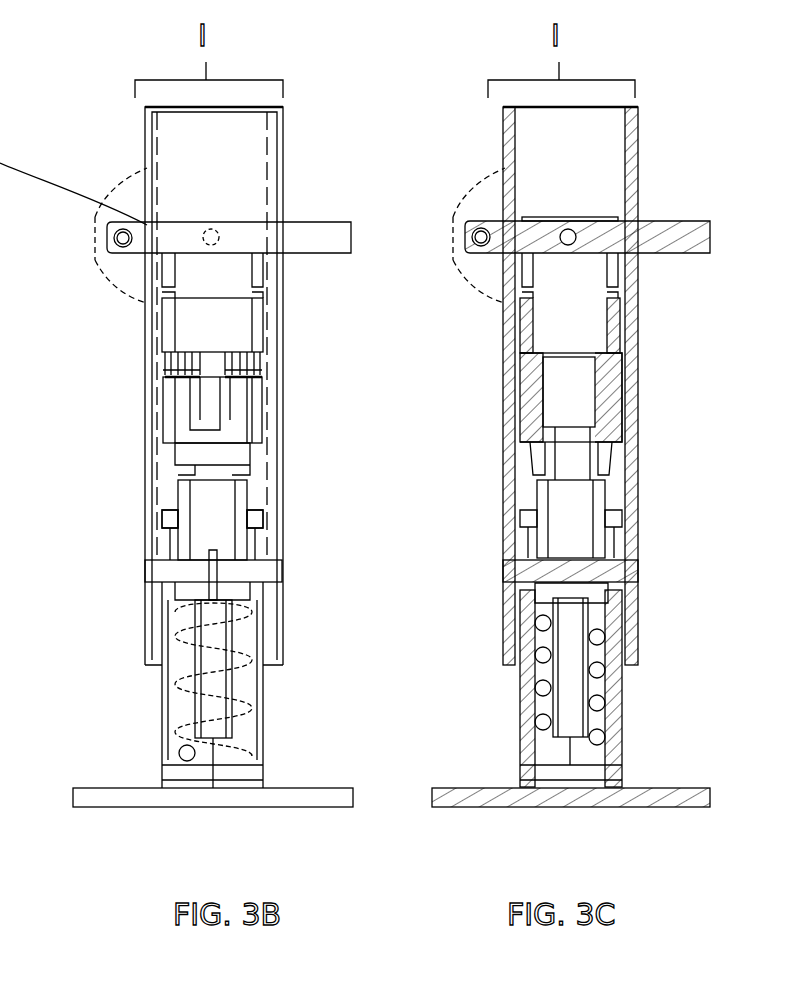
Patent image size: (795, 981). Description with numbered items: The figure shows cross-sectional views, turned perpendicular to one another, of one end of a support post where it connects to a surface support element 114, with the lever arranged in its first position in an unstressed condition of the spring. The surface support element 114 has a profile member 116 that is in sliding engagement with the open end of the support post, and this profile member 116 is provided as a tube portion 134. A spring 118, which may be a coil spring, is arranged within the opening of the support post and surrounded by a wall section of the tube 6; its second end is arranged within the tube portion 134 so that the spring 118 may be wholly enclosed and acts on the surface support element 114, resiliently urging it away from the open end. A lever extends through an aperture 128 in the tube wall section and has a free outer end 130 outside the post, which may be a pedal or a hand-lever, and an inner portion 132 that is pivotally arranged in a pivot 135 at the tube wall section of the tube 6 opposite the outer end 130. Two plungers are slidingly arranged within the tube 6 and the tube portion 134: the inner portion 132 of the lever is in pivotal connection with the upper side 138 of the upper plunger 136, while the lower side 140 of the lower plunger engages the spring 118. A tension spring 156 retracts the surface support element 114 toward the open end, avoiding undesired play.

In FIG. 3B, the inner portion of the lever 132 is at (203, 193).
In FIG. 3B, the free outer end of the lever 130 is at (307, 232).
In FIG. 3B, the pivot 135 is at (118, 246).
In FIG. 3C, the pivot 135 is at (470, 238).
In FIG. 3B, the upper plunger 136 is at (238, 331).
In FIG. 3B, the profile member 116 is at (261, 513).
In FIG. 3B, the tube portion 134 is at (212, 519).
In FIG. 3B, the tension spring 156 is at (231, 592).
In FIG. 3B, the tube 6 is at (284, 627).
In FIG. 3B, the spring 118 is at (246, 703).
In FIG. 3B, the surface support element 114 is at (304, 785).
In FIG. 3C, the upper side of upper plunger 138 is at (598, 211).
In FIG. 3C, the aperture 128 is at (656, 306).
In FIG. 3C, the lower side of the lower plunger 140 is at (595, 607).